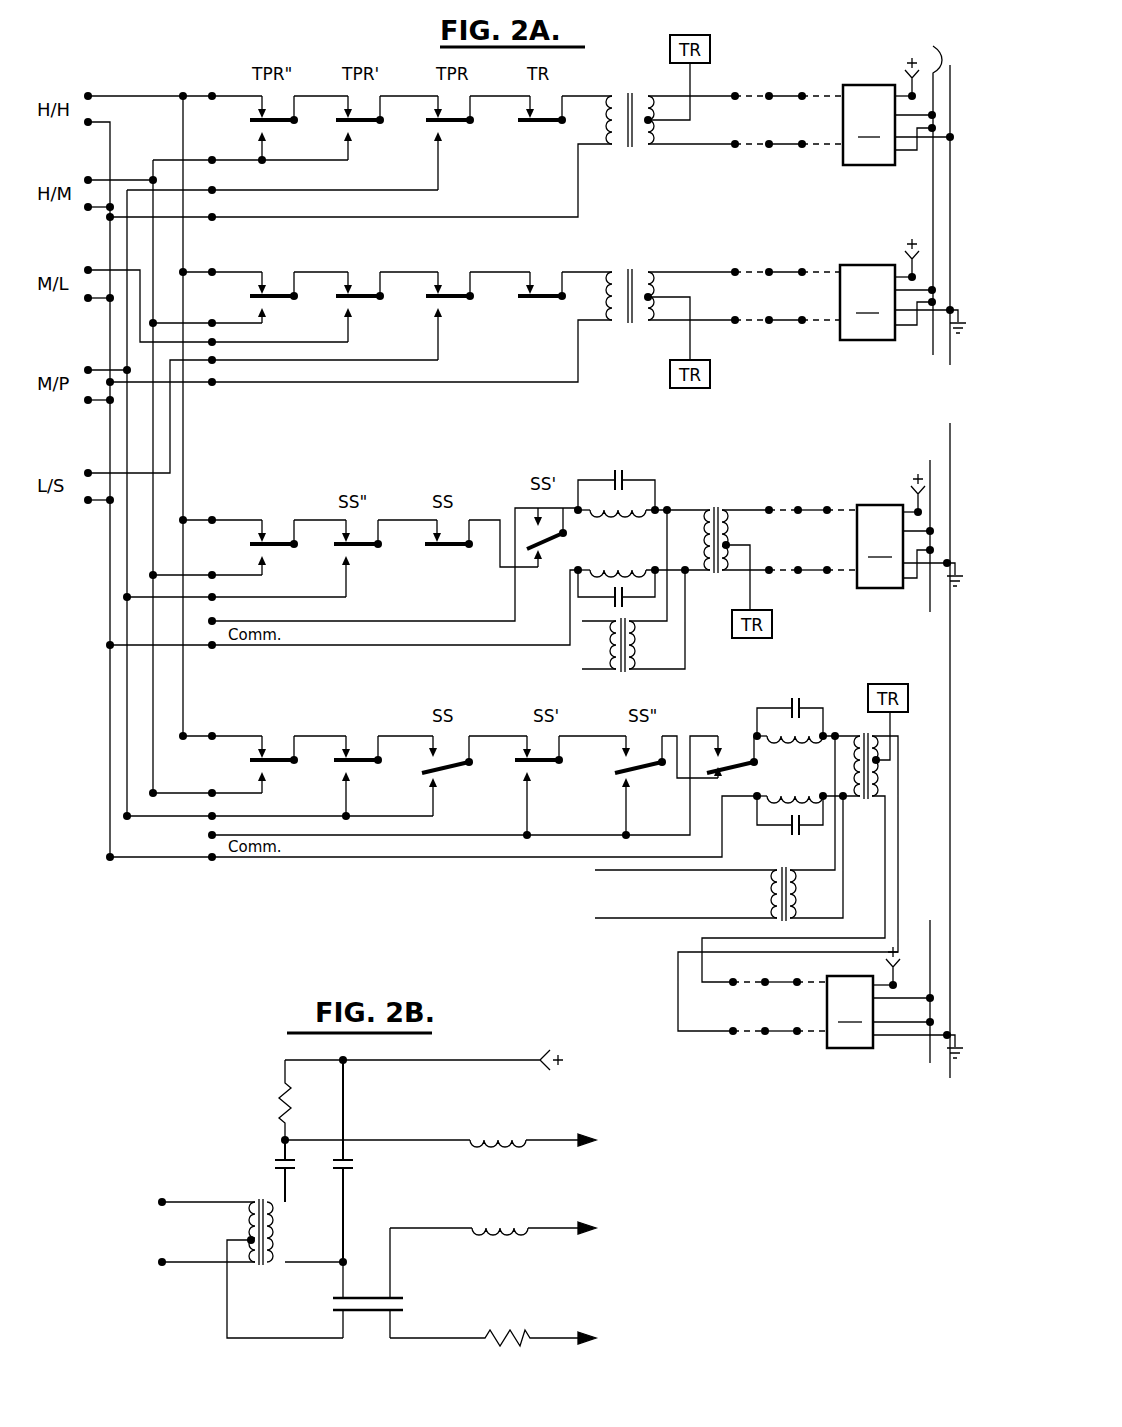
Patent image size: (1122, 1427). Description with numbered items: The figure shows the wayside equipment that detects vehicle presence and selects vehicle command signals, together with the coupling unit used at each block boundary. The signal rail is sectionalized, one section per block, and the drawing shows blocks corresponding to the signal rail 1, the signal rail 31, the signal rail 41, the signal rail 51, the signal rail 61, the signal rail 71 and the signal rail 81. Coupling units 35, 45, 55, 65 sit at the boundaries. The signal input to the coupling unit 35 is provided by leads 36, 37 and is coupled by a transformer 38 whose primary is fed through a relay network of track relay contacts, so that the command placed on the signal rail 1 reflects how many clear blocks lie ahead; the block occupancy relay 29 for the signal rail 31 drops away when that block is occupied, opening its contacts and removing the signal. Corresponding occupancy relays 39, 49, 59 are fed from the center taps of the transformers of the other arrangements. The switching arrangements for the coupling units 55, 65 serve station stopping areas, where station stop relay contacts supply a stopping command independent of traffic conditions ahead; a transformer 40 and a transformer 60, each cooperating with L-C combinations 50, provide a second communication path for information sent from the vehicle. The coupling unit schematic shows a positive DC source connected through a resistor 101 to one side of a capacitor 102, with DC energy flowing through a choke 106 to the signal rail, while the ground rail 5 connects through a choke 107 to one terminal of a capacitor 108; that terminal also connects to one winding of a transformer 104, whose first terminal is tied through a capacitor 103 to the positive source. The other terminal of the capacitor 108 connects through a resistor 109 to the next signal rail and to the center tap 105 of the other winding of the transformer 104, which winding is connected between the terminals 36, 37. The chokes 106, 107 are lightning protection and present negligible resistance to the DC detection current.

In FIG. 2A, the signal rail 1 is at (935, 189).
In FIG. 2B, the signal rail 1 is at (599, 1132).
In FIG. 2A, the ground rail 5 is at (950, 210).
In FIG. 2B, the ground rail 5 is at (598, 1230).
In FIG. 2A, the block occupancy relay 29 is at (710, 52).
In FIG. 2A, the signal rail 31 is at (932, 185).
In FIG. 2B, the signal rail 31 is at (603, 1338).
In FIG. 2A, the coupling unit 35 is at (881, 111).
In FIG. 2A, the lead 36 is at (832, 98).
In FIG. 2B, the lead 36 is at (164, 1180).
In FIG. 2A, the lead 37 is at (822, 148).
In FIG. 2B, the lead 37 is at (164, 1240).
In FIG. 2A, the transformer 38 is at (630, 150).
In FIG. 2A, the block occupancy relay 39 is at (710, 376).
In FIG. 2A, the transformer 40 is at (622, 670).
In FIG. 2A, the signal rail 41 is at (931, 337).
In FIG. 2A, the coupling unit 45 is at (879, 289).
In FIG. 2A, the block occupancy relay 49 is at (772, 635).
In FIG. 2A, the L-C combinations 50 is at (638, 560).
In FIG. 2A, the signal rail 51 is at (930, 462).
In FIG. 2A, the coupling unit 55 is at (891, 531).
In FIG. 2A, the block occupancy relay 59 is at (918, 682).
In FIG. 2A, the transformer 60 is at (773, 850).
In FIG. 2A, the signal rail 61 is at (930, 604).
In FIG. 2A, the coupling unit 65 is at (863, 997).
In FIG. 2A, the signal rail 71 is at (930, 969).
In FIG. 2A, the signal rail 81 is at (930, 1055).
In FIG. 2B, the resistor 101 is at (283, 1105).
In FIG. 2B, the capacitor 102 is at (275, 1168).
In FIG. 2B, the capacitor 103 is at (353, 1166).
In FIG. 2B, the transformer 104 is at (276, 1264).
In FIG. 2B, the center tap 105 is at (251, 1238).
In FIG. 2B, the choke 106 is at (492, 1133).
In FIG. 2B, the choke 107 is at (497, 1238).
In FIG. 2B, the capacitor 108 is at (335, 1306).
In FIG. 2B, the resistor 109 is at (505, 1335).